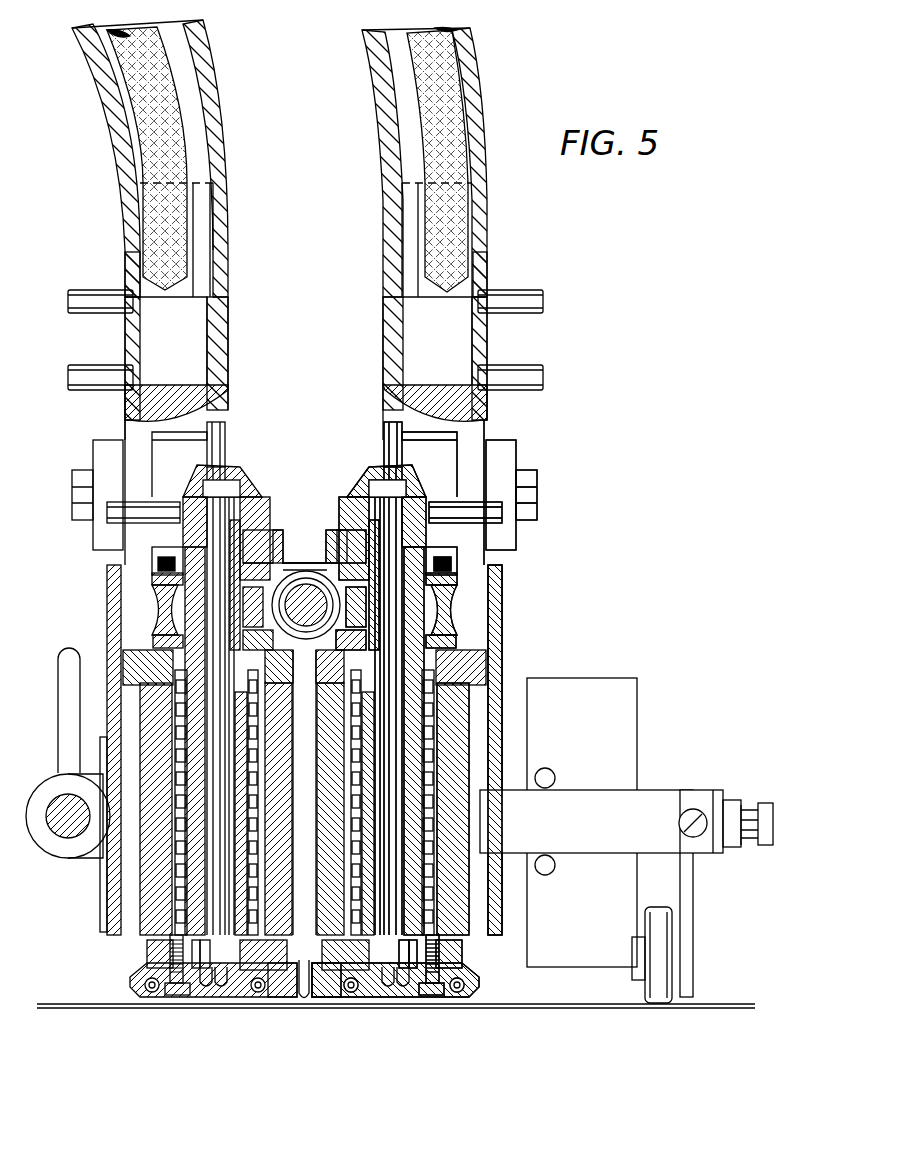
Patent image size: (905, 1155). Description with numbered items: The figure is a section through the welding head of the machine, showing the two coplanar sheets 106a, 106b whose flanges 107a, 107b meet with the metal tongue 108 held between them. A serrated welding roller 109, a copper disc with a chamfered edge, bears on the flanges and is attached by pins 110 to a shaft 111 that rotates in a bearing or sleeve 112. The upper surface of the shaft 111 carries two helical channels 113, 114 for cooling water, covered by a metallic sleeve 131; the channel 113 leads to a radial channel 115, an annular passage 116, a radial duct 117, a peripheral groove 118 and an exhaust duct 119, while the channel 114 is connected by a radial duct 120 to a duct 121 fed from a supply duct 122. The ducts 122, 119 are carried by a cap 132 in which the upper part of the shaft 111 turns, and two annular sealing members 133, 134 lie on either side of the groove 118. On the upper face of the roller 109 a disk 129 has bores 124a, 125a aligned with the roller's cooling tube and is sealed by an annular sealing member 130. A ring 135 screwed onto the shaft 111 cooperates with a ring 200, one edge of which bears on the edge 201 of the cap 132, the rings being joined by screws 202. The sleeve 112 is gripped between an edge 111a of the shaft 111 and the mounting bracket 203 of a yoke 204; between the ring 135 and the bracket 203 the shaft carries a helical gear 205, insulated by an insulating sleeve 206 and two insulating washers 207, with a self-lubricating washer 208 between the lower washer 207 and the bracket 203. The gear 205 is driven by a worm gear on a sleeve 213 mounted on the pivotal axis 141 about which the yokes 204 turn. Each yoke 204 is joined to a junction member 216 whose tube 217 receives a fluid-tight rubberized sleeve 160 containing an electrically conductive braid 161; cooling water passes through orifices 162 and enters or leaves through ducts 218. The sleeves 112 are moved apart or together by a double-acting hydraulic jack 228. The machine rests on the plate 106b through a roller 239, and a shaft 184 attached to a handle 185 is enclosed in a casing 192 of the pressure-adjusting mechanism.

The fluid-tight rubberized sleeve 160 is at (108, 92).
The electrically conductive braid 161 is at (160, 78).
The orifices 162 is at (203, 270).
The tube 217 is at (210, 224).
The junction member 216 is at (128, 275).
The ducts 218 is at (78, 290).
The peripheral groove 118 is at (185, 510).
The exhaust duct 119 is at (490, 505).
The duct 121 is at (222, 440).
The supply duct 122 is at (388, 440).
The annular sealing member 133 is at (230, 480).
The cap 132 is at (360, 497).
The ring 135 is at (432, 545).
The annular passage 116 is at (232, 515).
The annular sealing member 134 is at (248, 525).
The radial duct 117 is at (158, 550).
The sleeve 213 is at (300, 582).
The ring 200 is at (455, 537).
The edge 201 is at (470, 578).
The yoke 204 is at (470, 600).
The insulating washers 207 is at (160, 580).
The insulating sleeve 206 is at (165, 600).
The screws 202 is at (462, 594).
The helical gear 205 is at (372, 600).
The pivotal axis 141 is at (455, 642).
The helical channel 113 is at (123, 668).
The self-lubricating washer 208 is at (470, 668).
The radial channel 115 is at (190, 690).
The handle 185 is at (70, 745).
The mounting bracket 203 is at (440, 690).
The radial duct 120 is at (370, 697).
The double-acting hydraulic jack 228 is at (625, 768).
The shaft 184 is at (76, 842).
The casing 192 is at (100, 928).
The metallic sleeve 131 is at (163, 897).
The edge 111a is at (148, 950).
The sheet 106a is at (158, 1004).
The pins 110 is at (183, 995).
The disk 129 is at (220, 970).
The flange 107a is at (270, 997).
The annular sealing member 130 is at (240, 957).
The shaft 111 is at (283, 987).
The tongue of metal 108 is at (303, 1005).
The flange 107b is at (318, 998).
The bore 125a is at (395, 957).
The bore 124a is at (405, 998).
The serrated welding roller 109 is at (472, 997).
The bearing 112 is at (457, 925).
The sheet 106b is at (530, 1008).
The helical channel 114 is at (478, 903).
The roller 239 is at (656, 990).